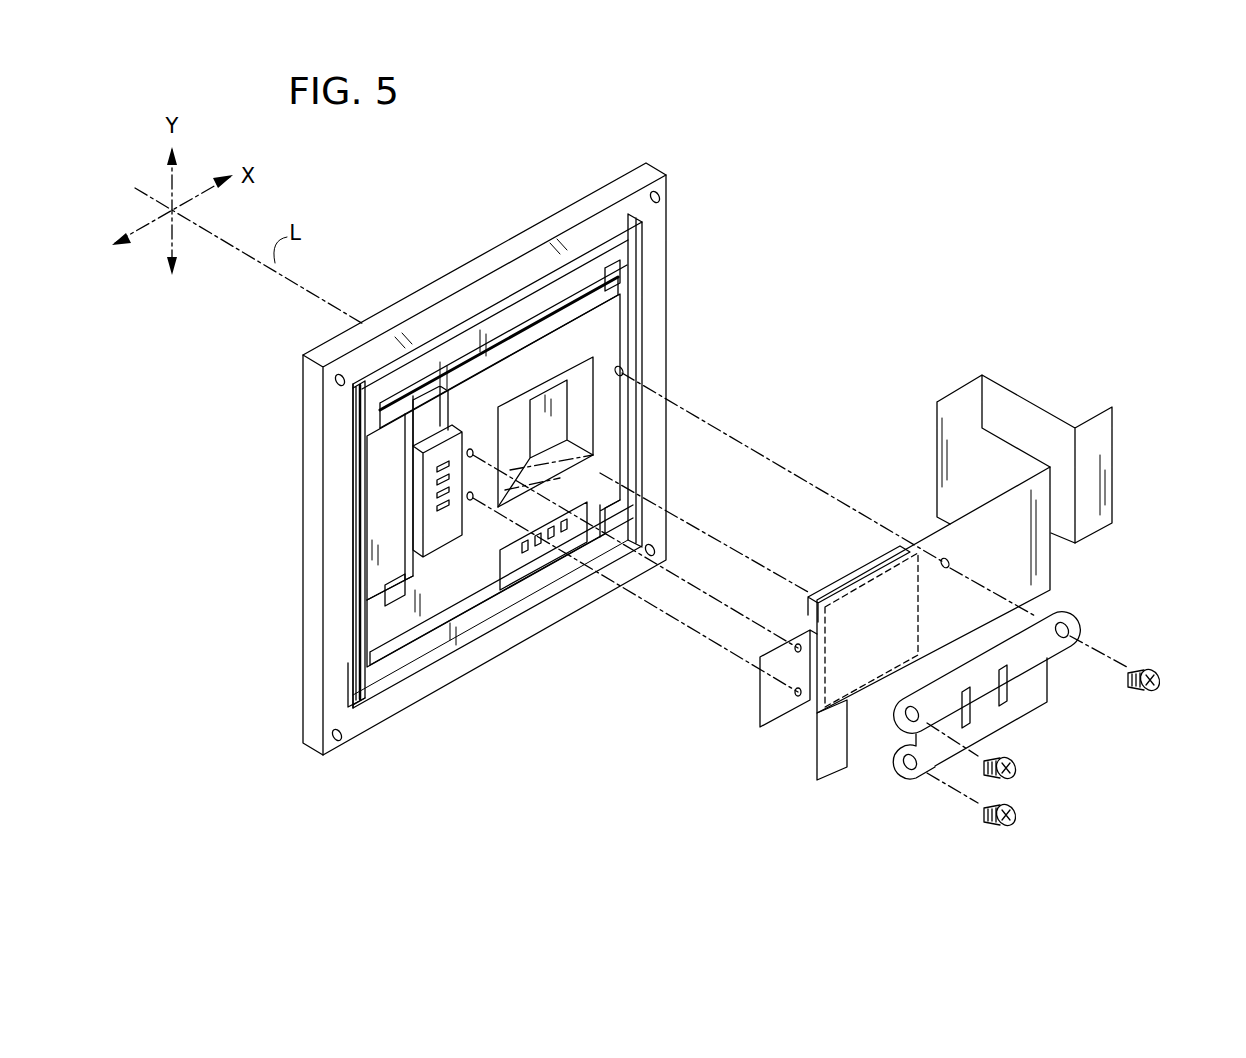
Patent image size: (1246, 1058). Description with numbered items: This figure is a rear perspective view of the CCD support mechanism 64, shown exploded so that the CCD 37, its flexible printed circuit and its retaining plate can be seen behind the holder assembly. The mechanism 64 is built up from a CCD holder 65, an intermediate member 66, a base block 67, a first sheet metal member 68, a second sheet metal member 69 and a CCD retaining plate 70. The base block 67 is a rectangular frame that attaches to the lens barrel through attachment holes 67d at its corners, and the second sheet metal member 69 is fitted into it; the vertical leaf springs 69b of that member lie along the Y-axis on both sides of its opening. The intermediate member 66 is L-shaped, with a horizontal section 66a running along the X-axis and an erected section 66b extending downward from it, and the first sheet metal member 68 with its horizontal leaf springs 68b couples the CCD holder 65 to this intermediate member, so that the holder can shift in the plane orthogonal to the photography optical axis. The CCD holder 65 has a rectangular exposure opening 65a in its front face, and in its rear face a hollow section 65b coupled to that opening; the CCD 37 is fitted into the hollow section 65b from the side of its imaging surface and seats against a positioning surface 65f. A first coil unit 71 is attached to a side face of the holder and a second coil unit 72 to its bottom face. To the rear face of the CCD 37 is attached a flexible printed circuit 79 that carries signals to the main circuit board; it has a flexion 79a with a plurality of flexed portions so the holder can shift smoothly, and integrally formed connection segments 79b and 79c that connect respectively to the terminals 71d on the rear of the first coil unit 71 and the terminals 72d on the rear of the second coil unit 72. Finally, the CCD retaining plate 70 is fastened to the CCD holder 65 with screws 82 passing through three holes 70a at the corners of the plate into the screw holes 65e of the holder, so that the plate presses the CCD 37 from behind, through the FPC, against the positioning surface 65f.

The CCD support mechanism 64 is at (660, 163).
The CCD holder 65 is at (610, 338).
The exposure opening 65a is at (624, 373).
The hollow section 65b is at (580, 415).
The positioning surface 65f is at (586, 462).
The screw holes 65e is at (471, 500).
The intermediate member 66 is at (377, 447).
The horizontal section 66a is at (470, 343).
The erected section 66b is at (380, 566).
The base block 67 is at (490, 661).
The frame hole 67d is at (341, 741).
The first sheet metal member 68 is at (549, 318).
The horizontal leaf springs 68b is at (626, 277).
The second sheet metal member 69 is at (349, 630).
The vertical leaf springs 69b is at (628, 286).
The first coil unit 71 is at (420, 510).
The terminals 71d is at (437, 474).
The second coil unit 72 is at (556, 565).
The terminals 72d is at (525, 550).
The CCD 37 is at (860, 535).
The flexible printed circuit 79 is at (1047, 570).
The flexion 79a is at (1017, 405).
The connection segment 79b is at (773, 707).
The connection segment 79c is at (855, 755).
The CCD retaining plate 70 is at (1017, 713).
The holes 70a is at (1070, 630).
The screws 82 is at (1162, 680).